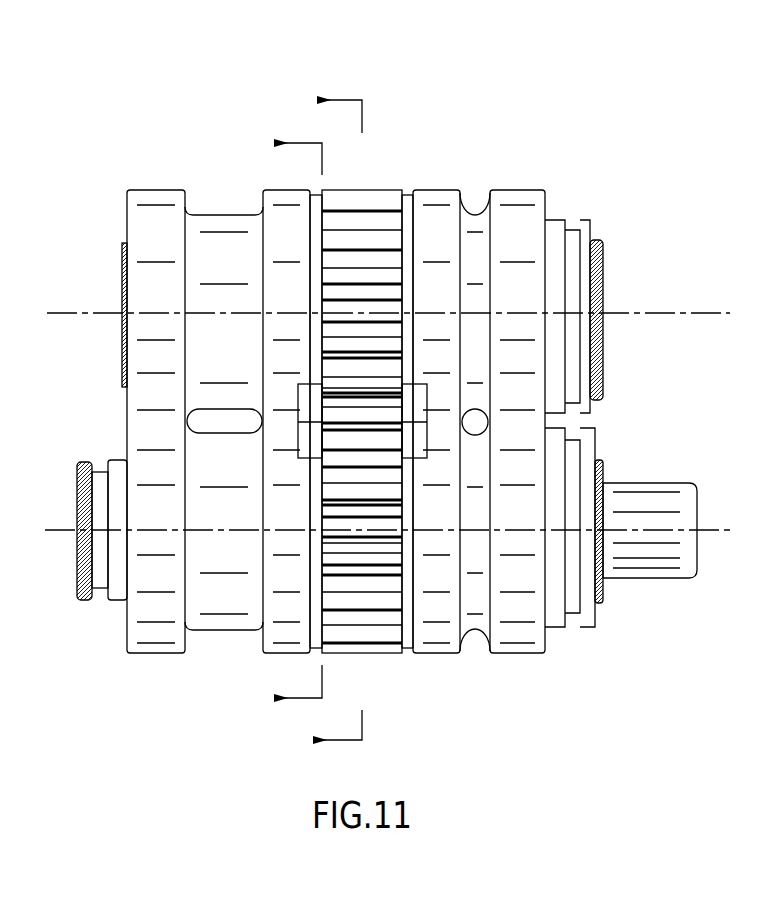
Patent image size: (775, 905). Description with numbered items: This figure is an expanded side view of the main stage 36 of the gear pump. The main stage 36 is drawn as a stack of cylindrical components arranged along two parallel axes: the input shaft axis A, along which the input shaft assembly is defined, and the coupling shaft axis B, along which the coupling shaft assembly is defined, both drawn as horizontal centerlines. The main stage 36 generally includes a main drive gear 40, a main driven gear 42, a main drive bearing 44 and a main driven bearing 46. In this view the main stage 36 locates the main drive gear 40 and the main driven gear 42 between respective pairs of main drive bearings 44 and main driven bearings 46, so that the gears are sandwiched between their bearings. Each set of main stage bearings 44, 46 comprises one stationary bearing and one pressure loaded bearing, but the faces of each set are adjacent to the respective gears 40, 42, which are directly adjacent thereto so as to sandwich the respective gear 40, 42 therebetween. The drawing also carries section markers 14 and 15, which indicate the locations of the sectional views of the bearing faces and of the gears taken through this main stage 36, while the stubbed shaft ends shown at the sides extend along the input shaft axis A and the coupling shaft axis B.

The main stage 36 is at (405, 78).
The main drive gear 40 is at (390, 655).
The main driven gear 42 is at (380, 190).
The main drive bearing 44 is at (160, 655).
The main driven bearing 46 is at (150, 190).
The section line 14 is at (308, 422).
The section line 15 is at (347, 425).
The input shaft axis A is at (713, 530).
The coupling shaft axis B is at (717, 313).